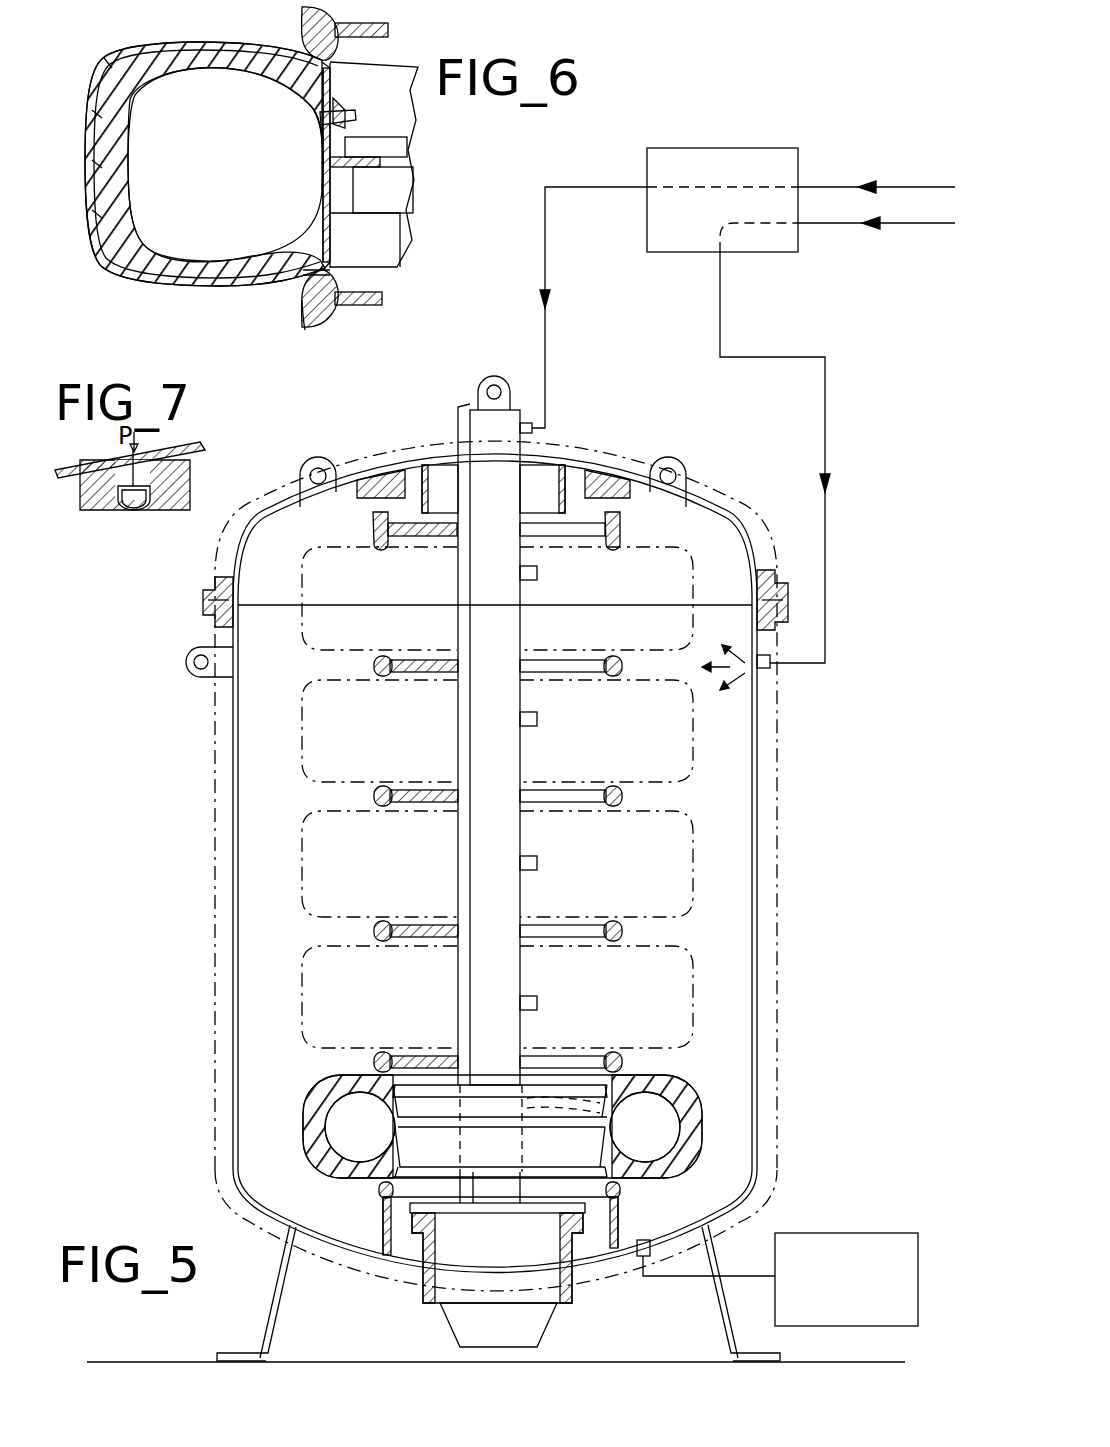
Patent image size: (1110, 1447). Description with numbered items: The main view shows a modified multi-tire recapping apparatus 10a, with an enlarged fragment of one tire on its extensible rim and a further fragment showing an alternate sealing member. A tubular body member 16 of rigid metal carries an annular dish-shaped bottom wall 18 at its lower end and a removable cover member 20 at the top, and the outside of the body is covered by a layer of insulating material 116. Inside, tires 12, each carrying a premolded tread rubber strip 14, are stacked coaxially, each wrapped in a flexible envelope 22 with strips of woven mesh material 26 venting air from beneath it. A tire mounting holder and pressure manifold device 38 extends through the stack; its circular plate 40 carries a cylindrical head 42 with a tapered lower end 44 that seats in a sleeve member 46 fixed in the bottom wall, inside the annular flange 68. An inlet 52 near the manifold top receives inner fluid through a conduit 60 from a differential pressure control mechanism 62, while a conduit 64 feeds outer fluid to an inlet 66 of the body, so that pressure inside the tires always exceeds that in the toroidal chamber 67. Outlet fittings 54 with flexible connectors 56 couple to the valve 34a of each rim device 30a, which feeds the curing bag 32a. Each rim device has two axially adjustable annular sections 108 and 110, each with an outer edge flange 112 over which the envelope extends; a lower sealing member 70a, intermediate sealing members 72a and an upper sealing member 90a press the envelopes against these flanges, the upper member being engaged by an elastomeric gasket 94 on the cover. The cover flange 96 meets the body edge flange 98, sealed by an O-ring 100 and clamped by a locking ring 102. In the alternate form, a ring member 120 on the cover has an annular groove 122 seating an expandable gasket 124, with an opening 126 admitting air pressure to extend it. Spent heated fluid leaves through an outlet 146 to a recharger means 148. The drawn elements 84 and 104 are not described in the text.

In FIG. 5, the multi-tire recapping apparatus 10a is at (796, 830).
In FIG. 5, the tire 12 is at (680, 1106).
In FIG. 6, the tire 12 is at (138, 92).
In FIG. 5, the tread rubber strip 14 is at (690, 1130).
In FIG. 6, the tread rubber strip 14 is at (88, 116).
In FIG. 5, the tubular body member 16 is at (760, 942).
In FIG. 5, the bottom wall 18 is at (265, 1212).
In FIG. 5, the cover member 20 is at (733, 517).
In FIG. 7, the cover member 20 is at (200, 444).
In FIG. 6, the flexible envelope 22 is at (192, 45).
In FIG. 6, the woven mesh material strips 26 is at (345, 268).
In FIG. 5, the rim device 30a is at (396, 1102).
In FIG. 6, the rim device 30a is at (332, 104).
In FIG. 6, the curing bag 32a is at (138, 224).
In FIG. 5, the valve 34a is at (600, 1120).
In FIG. 6, the valve 34a is at (360, 117).
In FIG. 5, the tire mounting holder and pressure manifold device 38 is at (538, 1002).
In FIG. 5, the circular plate 40 is at (505, 1214).
In FIG. 5, the cylindrical head 42 is at (506, 1273).
In FIG. 5, the tapered lower end 44 is at (509, 1344).
In FIG. 5, the cylindrical sleeve member 46 is at (428, 1286).
In FIG. 5, the inlet 52 is at (528, 422).
In FIG. 5, the outlet fittings 54 is at (538, 573).
In FIG. 5, the flexible connector 56 is at (572, 1108).
In FIG. 5, the conduit 60 is at (548, 262).
In FIG. 5, the differential pressure control mechanism 62 is at (740, 148).
In FIG. 5, the conduit 64 is at (828, 398).
In FIG. 5, the inlet 66 is at (770, 665).
In FIG. 5, the toroidal chamber 67 is at (283, 941).
In FIG. 5, the annular flange 68 is at (618, 1210).
In FIG. 5, the lower sealing member 70a is at (380, 1190).
In FIG. 5, the intermediate sealing members 72a is at (372, 796).
In FIG. 6, the intermediate sealing members 72a is at (305, 330).
In FIG. 5, the center post 84 is at (468, 998).
In FIG. 5, the upper sealing member 90a is at (372, 528).
In FIG. 5, the elastomeric gasket 94 is at (618, 512).
In FIG. 5, the flange 96 is at (770, 582).
In FIG. 5, the edge flange 98 is at (772, 626).
In FIG. 5, the O-ring 100 is at (204, 620).
In FIG. 5, the locking ring 102 is at (204, 597).
In FIG. 5, the support legs 104 is at (266, 1318).
In FIG. 6, the annular rim section 108 is at (322, 90).
In FIG. 6, the annular rim section 110 is at (326, 240).
In FIG. 6, the outer edge flange 112 is at (297, 276).
In FIG. 5, the insulating material 116 is at (214, 822).
In FIG. 7, the ring member 120 is at (98, 500).
In FIG. 7, the annular groove 122 is at (127, 508).
In FIG. 7, the expandable gasket 124 is at (147, 506).
In FIG. 7, the opening 126 is at (130, 470).
In FIG. 5, the outlet 146 is at (652, 1280).
In FIG. 5, the recharger means 148 is at (863, 1295).